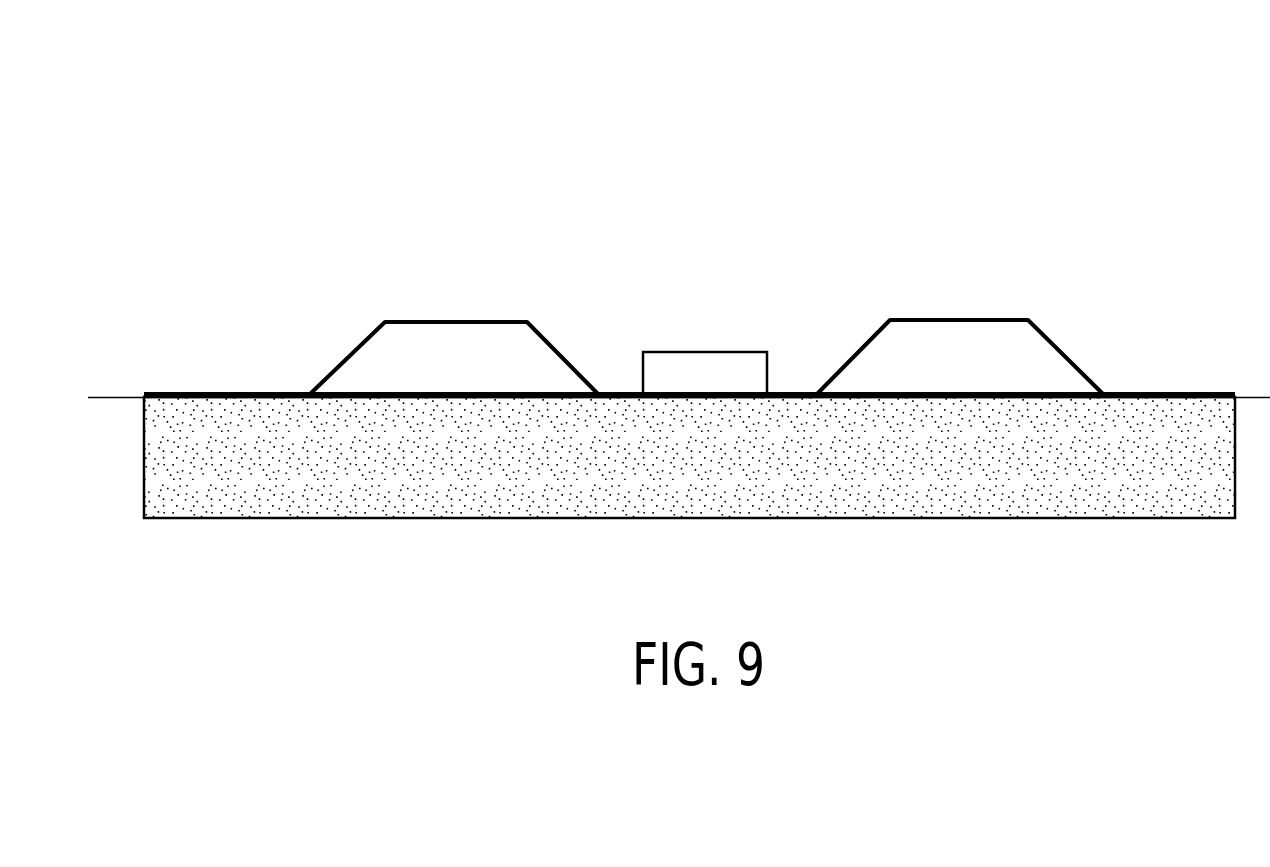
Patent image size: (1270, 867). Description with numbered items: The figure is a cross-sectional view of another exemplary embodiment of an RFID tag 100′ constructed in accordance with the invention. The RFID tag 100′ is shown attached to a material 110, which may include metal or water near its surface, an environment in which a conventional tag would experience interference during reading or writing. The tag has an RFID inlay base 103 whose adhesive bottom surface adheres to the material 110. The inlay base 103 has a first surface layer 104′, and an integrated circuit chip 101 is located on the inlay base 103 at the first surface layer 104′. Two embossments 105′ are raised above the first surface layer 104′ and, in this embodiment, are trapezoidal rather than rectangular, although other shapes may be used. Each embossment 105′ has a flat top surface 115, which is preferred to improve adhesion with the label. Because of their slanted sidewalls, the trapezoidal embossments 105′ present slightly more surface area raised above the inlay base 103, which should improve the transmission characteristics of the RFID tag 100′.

The RFID tag 100′ is at (1014, 133).
The integrated circuit chip 101 is at (718, 389).
The RFID inlay base 103 is at (1172, 372).
The first surface layer 104′ is at (797, 371).
The embossments 105′ is at (431, 344).
The material 110 is at (720, 473).
The flat top surface 115 is at (979, 304).